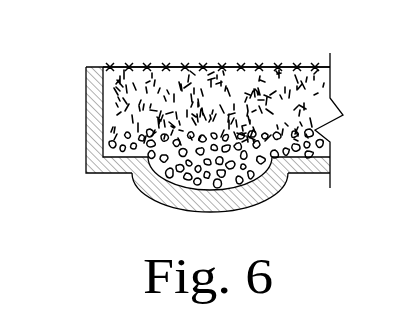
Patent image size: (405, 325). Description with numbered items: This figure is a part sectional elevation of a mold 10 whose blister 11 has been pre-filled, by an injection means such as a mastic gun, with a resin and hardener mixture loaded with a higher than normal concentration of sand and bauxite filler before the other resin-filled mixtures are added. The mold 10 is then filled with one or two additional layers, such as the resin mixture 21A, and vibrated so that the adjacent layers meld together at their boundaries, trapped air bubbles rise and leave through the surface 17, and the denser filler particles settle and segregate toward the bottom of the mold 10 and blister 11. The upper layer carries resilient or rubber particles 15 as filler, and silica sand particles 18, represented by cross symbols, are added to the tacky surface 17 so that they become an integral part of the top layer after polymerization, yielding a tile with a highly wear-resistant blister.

The mold 10 is at (87, 88).
The blister 11 is at (148, 195).
The resilient particles 15 is at (213, 64).
The surface 17 is at (175, 66).
The silica sand particles 18 is at (127, 66).
The resin mixture 21A is at (324, 88).